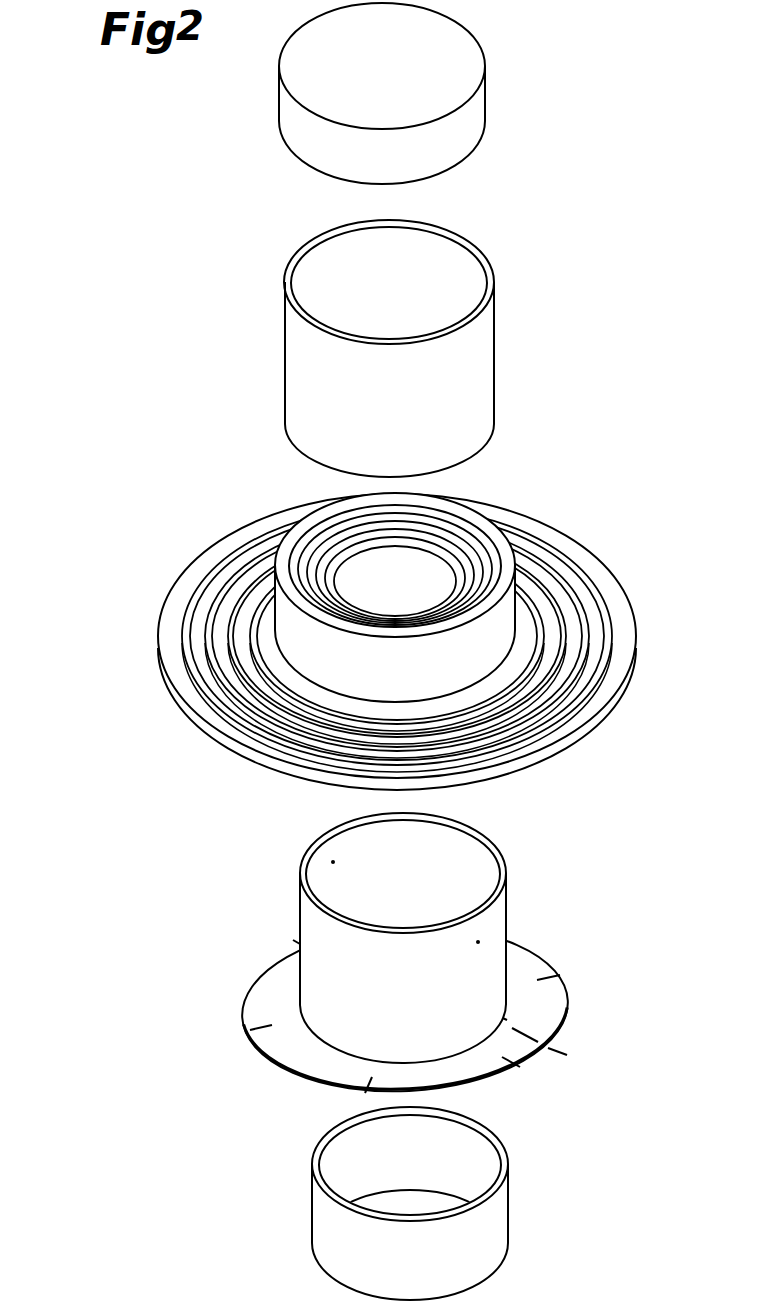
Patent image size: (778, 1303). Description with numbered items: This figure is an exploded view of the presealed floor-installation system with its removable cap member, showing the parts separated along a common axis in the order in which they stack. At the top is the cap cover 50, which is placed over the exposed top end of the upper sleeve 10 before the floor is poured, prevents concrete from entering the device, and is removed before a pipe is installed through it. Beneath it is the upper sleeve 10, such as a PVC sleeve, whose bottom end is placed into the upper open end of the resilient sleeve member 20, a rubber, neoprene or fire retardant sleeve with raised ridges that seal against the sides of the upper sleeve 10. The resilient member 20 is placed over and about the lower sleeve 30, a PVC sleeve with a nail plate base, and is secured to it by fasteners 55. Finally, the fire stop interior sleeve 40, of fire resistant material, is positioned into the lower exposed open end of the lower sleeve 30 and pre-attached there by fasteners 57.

The upper sleeve 10 is at (273, 348).
The resilient sleeve member 20 is at (349, 659).
The lower sleeve 30 is at (374, 956).
The fire stop interior sleeve 40 is at (281, 1203).
The cap cover 50 is at (473, 92).
The fasteners 55 is at (576, 786).
The fasteners 57 is at (457, 1016).